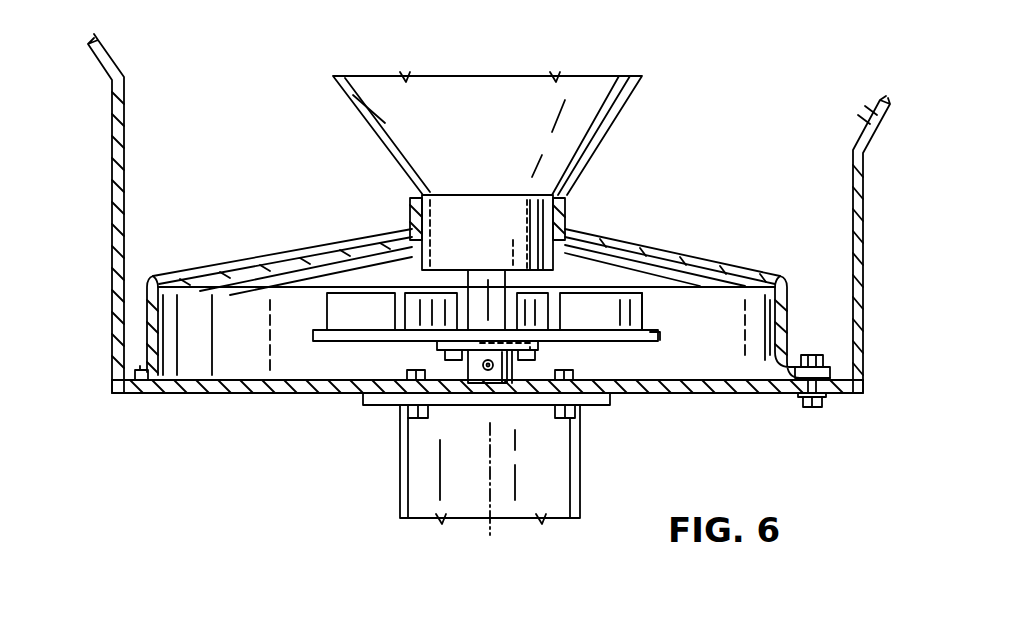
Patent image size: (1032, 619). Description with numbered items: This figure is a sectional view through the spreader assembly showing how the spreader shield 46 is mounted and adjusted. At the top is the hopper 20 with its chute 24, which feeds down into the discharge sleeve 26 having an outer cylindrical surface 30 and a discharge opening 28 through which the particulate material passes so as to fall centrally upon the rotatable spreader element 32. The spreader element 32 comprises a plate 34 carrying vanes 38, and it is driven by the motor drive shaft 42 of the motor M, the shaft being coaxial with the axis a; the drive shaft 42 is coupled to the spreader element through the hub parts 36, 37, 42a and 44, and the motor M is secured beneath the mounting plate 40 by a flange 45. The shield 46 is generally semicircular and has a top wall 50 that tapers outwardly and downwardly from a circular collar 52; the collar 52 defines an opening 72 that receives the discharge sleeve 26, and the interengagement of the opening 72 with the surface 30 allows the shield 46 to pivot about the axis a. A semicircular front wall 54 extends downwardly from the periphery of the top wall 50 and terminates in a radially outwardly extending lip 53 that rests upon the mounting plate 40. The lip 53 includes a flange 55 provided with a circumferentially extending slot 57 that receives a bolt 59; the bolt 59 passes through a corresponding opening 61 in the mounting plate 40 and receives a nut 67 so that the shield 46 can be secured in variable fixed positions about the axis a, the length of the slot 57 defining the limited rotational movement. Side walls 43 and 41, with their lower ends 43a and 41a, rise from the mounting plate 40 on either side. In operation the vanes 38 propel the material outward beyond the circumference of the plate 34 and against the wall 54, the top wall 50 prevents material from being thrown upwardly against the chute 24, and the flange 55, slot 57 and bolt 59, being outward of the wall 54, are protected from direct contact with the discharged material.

The hopper 20 is at (496, 133).
The chute 24 is at (343, 88).
The discharge sleeve 26 is at (558, 218).
The discharge opening 28 is at (537, 273).
The outer cylindrical surface 30 is at (418, 218).
The spreader element 32 is at (662, 322).
The plate 34 is at (622, 343).
The hub bracket 36 is at (473, 362).
The coupling sleeve 37 is at (503, 390).
The vanes 38 is at (410, 300).
The mounting plate 40 is at (267, 384).
The right side wall 41 is at (855, 170).
The lower end of right side wall 41a is at (862, 322).
The motor drive shaft 42 is at (482, 390).
The drive shaft 42a is at (490, 290).
The left side wall 43 is at (118, 127).
The lower end of left side wall 43a is at (118, 372).
The coupling block 44 is at (483, 387).
The motor flange 45 is at (580, 420).
The spreader shield 46 is at (466, 214).
The top wall 50 is at (637, 219).
The collar 52 is at (560, 205).
The lip 53 is at (140, 382).
The front wall 54 is at (150, 328).
The flange 55 is at (832, 370).
The slot 57 is at (822, 391).
The bolt 59 is at (812, 353).
The opening 61 is at (816, 403).
The nut 67 is at (805, 402).
The opening 72 is at (425, 200).
The axis a is at (490, 480).
The motor M is at (570, 493).